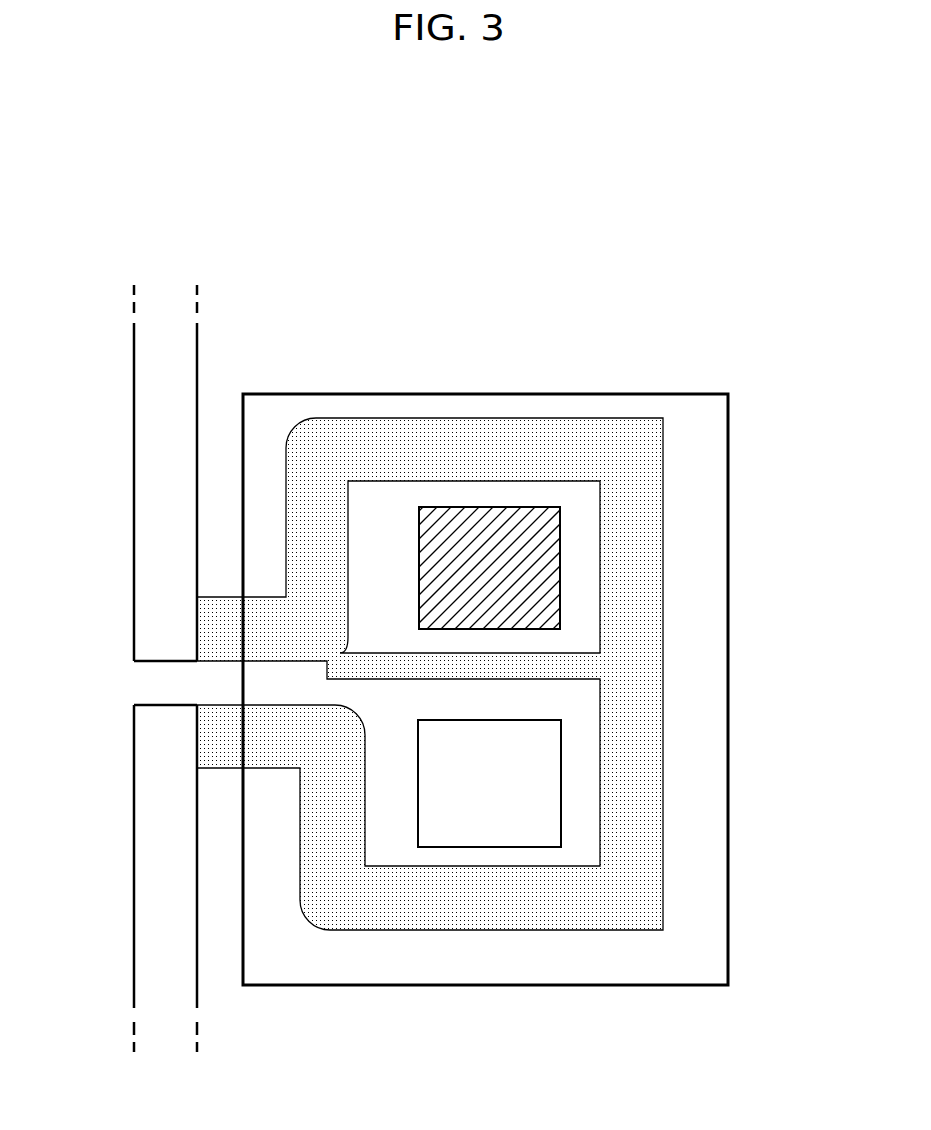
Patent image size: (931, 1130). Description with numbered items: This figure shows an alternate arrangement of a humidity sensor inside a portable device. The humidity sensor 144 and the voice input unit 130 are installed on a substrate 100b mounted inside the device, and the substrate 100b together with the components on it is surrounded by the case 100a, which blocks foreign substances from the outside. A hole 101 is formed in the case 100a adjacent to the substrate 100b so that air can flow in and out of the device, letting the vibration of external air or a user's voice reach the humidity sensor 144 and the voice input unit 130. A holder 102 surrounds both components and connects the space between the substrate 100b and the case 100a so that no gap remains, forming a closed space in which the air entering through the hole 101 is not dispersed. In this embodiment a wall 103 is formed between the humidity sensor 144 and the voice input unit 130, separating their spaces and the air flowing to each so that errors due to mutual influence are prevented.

The case 100a is at (134, 822).
The substrate 100b is at (697, 929).
The hole 101 is at (148, 684).
The holder 102 is at (643, 862).
The wall 103 is at (560, 645).
The voice input unit 130 is at (490, 525).
The humidity sensor 144 is at (487, 820).